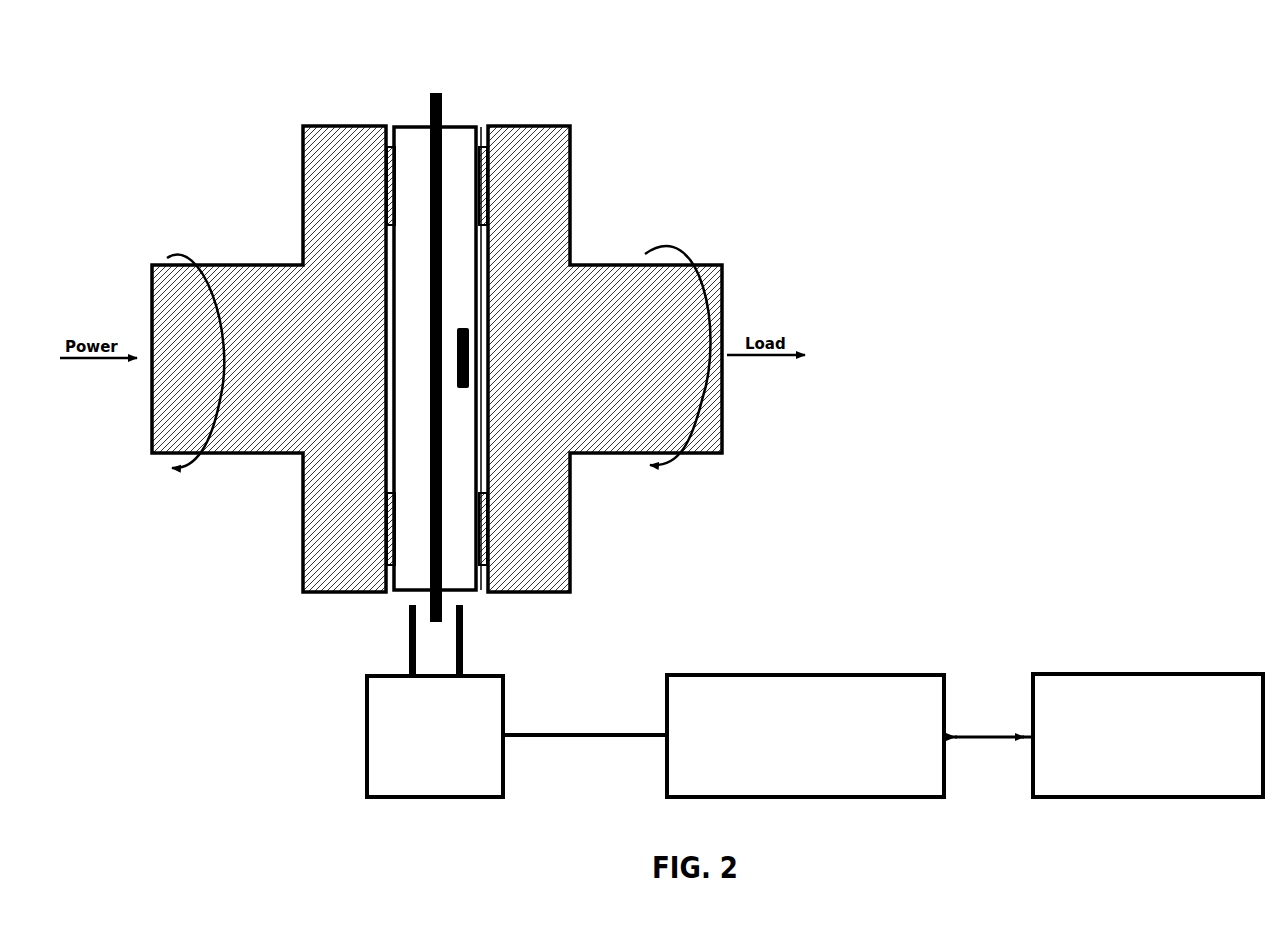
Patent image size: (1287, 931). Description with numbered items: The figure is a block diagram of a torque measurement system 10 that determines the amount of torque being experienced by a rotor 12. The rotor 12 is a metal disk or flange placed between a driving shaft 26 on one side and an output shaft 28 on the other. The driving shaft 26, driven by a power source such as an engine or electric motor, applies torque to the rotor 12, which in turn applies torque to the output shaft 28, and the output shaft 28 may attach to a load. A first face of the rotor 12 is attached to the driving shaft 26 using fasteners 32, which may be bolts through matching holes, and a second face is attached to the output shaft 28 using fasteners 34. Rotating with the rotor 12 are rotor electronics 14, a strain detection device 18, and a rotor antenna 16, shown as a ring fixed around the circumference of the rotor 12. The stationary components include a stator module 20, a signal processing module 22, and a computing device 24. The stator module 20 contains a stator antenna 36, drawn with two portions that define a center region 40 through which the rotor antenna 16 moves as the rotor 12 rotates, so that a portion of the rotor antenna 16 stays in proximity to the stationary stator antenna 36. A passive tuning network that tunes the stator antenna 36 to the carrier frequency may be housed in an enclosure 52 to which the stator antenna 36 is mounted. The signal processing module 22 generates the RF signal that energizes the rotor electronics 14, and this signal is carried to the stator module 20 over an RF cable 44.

The torque measurement system 10 is at (991, 82).
The rotor 12 is at (460, 127).
The rotor electronics 14 is at (521, 354).
The strain detection device 18 is at (469, 358).
The rotor antenna 16 is at (433, 93).
The stator module 20 is at (535, 661).
The signal processing module 22 is at (805, 736).
The computing device 24 is at (1148, 735).
The driving shaft 26 is at (275, 265).
The output shaft 28 is at (607, 265).
The fasteners 32 is at (392, 185).
The fasteners 34 is at (483, 185).
The stator antenna 36 is at (409, 632).
The center region 40 is at (441, 658).
The RF cable 44 is at (581, 737).
The enclosure 52 is at (435, 736).